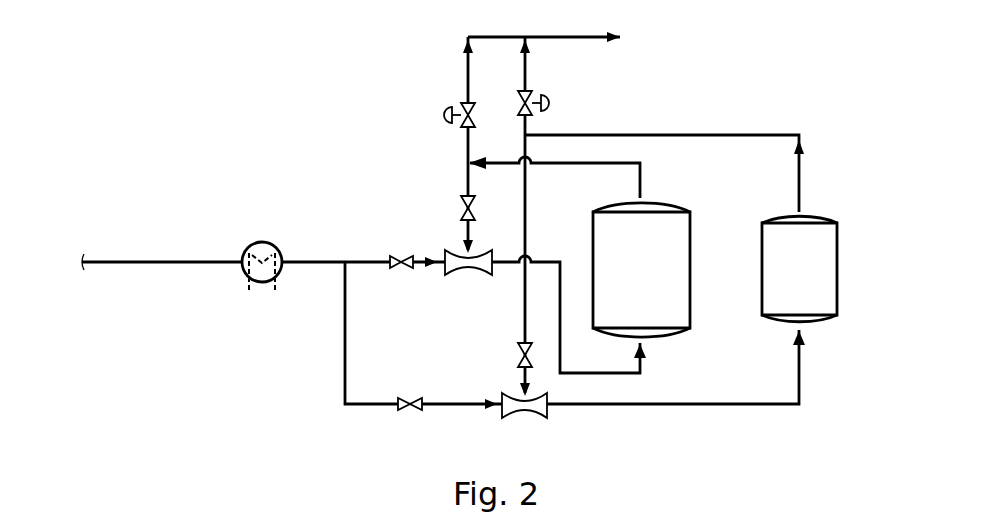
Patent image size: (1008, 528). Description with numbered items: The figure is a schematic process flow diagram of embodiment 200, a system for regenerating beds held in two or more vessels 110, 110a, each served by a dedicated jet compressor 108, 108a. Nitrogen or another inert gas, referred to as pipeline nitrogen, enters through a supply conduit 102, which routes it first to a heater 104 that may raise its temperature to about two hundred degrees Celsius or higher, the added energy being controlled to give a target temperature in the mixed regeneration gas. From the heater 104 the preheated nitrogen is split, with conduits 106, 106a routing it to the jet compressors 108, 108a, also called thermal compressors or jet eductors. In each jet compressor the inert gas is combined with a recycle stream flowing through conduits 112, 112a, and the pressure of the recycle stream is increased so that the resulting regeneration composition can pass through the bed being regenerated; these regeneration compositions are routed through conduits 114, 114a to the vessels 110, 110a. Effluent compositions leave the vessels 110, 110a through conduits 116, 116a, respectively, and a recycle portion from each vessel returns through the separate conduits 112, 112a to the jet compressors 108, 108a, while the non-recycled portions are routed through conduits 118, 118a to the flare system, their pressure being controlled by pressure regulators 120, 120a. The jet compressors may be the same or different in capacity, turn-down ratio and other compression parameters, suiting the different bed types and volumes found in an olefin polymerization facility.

The embodiment 200 is at (279, 119).
The supply conduit 102 is at (147, 262).
The heater 104 is at (260, 241).
The conduit 106 is at (375, 262).
The conduit 106a is at (345, 328).
The jet compressor 108 is at (485, 274).
The jet compressor 108a is at (550, 413).
The vessel 110 is at (665, 283).
The vessel 110a is at (828, 283).
The conduit 112 is at (465, 188).
The conduit 112a is at (522, 330).
The conduit 114 is at (628, 375).
The conduit 114a is at (770, 404).
The conduit 116 is at (610, 163).
The conduit 116a is at (772, 135).
The conduit 118 is at (465, 72).
The conduit 118a is at (528, 72).
The pressure regulator 120 is at (443, 112).
The pressure regulator 120a is at (552, 108).